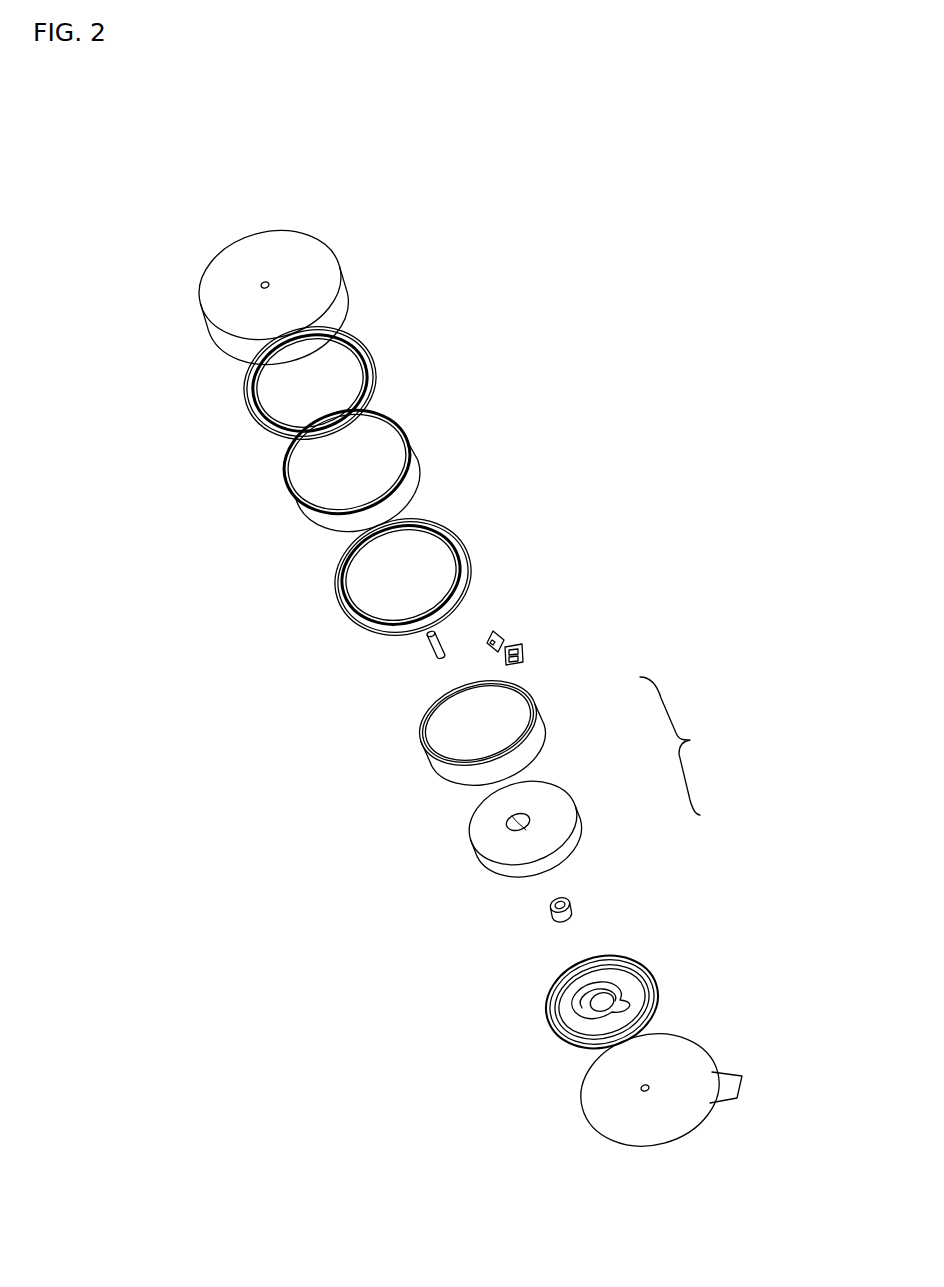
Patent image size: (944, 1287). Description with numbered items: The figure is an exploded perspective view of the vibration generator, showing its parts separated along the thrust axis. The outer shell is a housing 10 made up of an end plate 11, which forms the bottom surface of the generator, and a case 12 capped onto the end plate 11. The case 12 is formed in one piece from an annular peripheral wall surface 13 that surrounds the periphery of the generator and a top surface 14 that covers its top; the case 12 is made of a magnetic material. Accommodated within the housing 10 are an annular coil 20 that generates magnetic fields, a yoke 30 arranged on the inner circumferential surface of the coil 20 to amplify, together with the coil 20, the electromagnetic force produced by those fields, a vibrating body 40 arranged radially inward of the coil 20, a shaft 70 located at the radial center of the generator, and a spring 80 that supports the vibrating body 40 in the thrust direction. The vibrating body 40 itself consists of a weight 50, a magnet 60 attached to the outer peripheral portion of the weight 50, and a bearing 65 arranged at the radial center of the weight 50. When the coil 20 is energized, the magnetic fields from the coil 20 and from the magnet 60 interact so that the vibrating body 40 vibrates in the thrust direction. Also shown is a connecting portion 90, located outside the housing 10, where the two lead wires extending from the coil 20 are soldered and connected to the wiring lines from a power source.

The housing 10 is at (464, 693).
The end plate 11 is at (606, 1127).
The case 12 is at (277, 251).
The annular peripheral wall surface 13 is at (337, 292).
The top surface 14 is at (233, 267).
The annular coil 20 is at (415, 467).
The yoke 30 is at (375, 353).
The vibrating body 40 is at (567, 794).
The weight 50 is at (557, 795).
The magnet 60 is at (535, 723).
The bearing 65 is at (573, 908).
The shaft 70 is at (428, 640).
The spring 80 is at (635, 954).
The connecting portion 90 is at (512, 646).